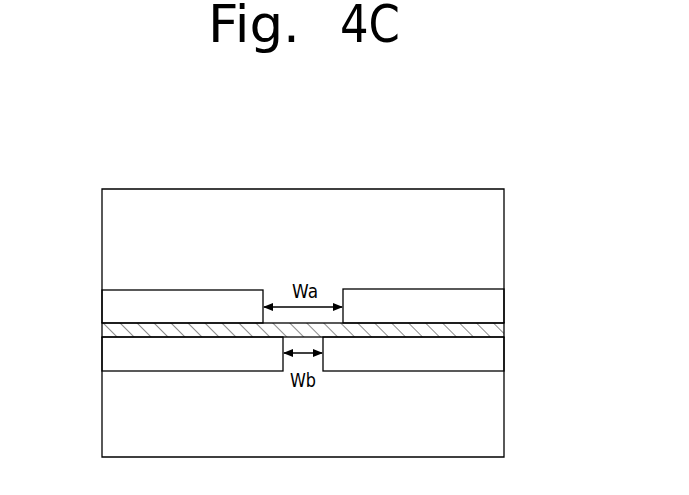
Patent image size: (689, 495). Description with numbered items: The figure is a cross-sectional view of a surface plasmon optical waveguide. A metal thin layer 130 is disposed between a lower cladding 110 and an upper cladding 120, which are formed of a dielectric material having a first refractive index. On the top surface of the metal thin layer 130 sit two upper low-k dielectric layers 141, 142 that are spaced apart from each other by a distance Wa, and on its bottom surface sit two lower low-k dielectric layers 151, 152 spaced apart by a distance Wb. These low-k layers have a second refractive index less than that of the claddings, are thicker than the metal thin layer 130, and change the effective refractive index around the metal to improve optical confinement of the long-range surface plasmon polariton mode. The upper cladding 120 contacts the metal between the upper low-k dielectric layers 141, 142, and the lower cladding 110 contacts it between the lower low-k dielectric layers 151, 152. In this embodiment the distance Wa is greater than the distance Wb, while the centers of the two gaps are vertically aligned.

The lower cladding 110 is at (495, 403).
The upper cladding 120 is at (495, 236).
The metal thin layer 130 is at (495, 330).
The upper low-k dielectric layer 141 is at (115, 307).
The upper low-k dielectric layer 142 is at (495, 308).
The lower low-k dielectric layer 151 is at (115, 354).
The lower low-k dielectric layer 152 is at (495, 355).